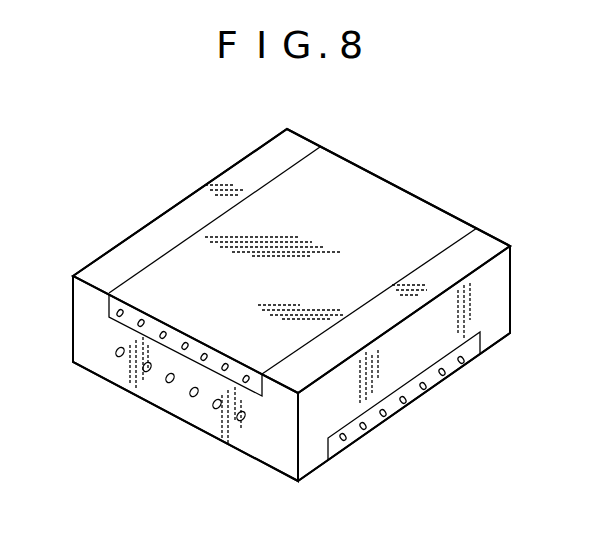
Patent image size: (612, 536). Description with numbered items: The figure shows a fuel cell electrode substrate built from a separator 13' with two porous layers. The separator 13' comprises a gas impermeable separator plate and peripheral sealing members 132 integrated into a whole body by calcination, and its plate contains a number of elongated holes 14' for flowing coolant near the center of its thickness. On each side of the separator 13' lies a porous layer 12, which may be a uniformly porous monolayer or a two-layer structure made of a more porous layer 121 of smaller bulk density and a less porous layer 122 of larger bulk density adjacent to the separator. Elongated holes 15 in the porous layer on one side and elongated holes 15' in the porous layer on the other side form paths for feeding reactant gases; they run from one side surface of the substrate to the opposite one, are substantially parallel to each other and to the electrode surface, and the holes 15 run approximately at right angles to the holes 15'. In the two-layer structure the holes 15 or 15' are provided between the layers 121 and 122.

The porous layer 12 is at (293, 304).
The more porous layer 121 is at (291, 282).
The less porous layer 122 is at (310, 318).
The peripheral sealing member 132 is at (287, 324).
The separator 13' is at (534, 289).
The elongated holes for flowing coolant 14' is at (157, 386).
The elongated holes 15 is at (183, 340).
The elongated holes 15' is at (402, 404).